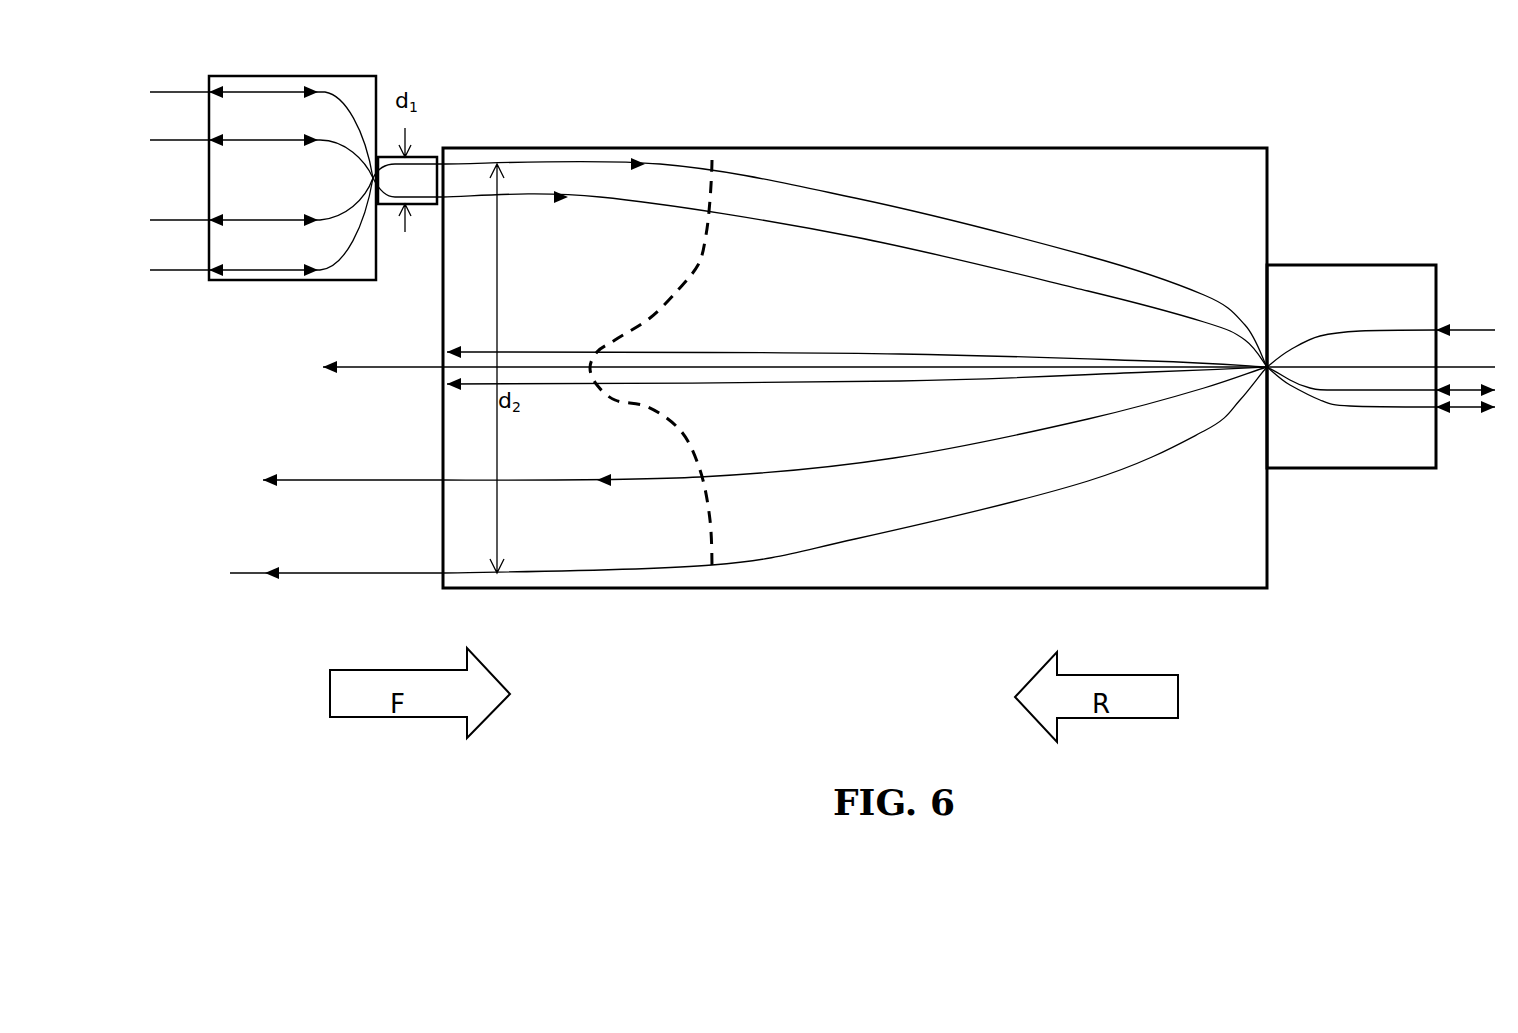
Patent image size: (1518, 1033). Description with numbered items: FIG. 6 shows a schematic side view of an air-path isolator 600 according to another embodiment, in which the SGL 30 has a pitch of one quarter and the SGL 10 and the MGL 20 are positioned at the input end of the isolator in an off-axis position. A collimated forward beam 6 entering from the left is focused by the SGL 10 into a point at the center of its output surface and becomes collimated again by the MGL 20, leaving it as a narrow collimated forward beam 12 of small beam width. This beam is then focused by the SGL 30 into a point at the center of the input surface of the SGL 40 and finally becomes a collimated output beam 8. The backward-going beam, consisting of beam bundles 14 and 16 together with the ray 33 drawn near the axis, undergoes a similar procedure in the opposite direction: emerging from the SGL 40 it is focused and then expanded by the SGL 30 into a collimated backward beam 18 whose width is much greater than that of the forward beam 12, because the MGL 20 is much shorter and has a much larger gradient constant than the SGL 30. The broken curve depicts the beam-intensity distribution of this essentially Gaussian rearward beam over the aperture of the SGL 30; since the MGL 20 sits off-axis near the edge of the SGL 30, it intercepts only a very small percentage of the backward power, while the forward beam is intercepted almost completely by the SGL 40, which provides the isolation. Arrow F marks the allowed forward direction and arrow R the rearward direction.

The optical system 600 is at (855, 337).
The collimated forward beam 6 is at (203, 285).
The SGL (L1) 10 is at (270, 282).
The collimated forward beam 12 is at (437, 157).
The MGL (L4) 20 is at (425, 210).
The SGL (L2) 30 is at (597, 146).
The paraxial ray 33 is at (474, 344).
The beam bundle 16 is at (756, 338).
The beam bundle 14 is at (1154, 250).
The collimated backward beam 18 is at (406, 558).
The SGL (L3) 40 is at (1352, 263).
The collimated output beam 8 is at (1466, 423).